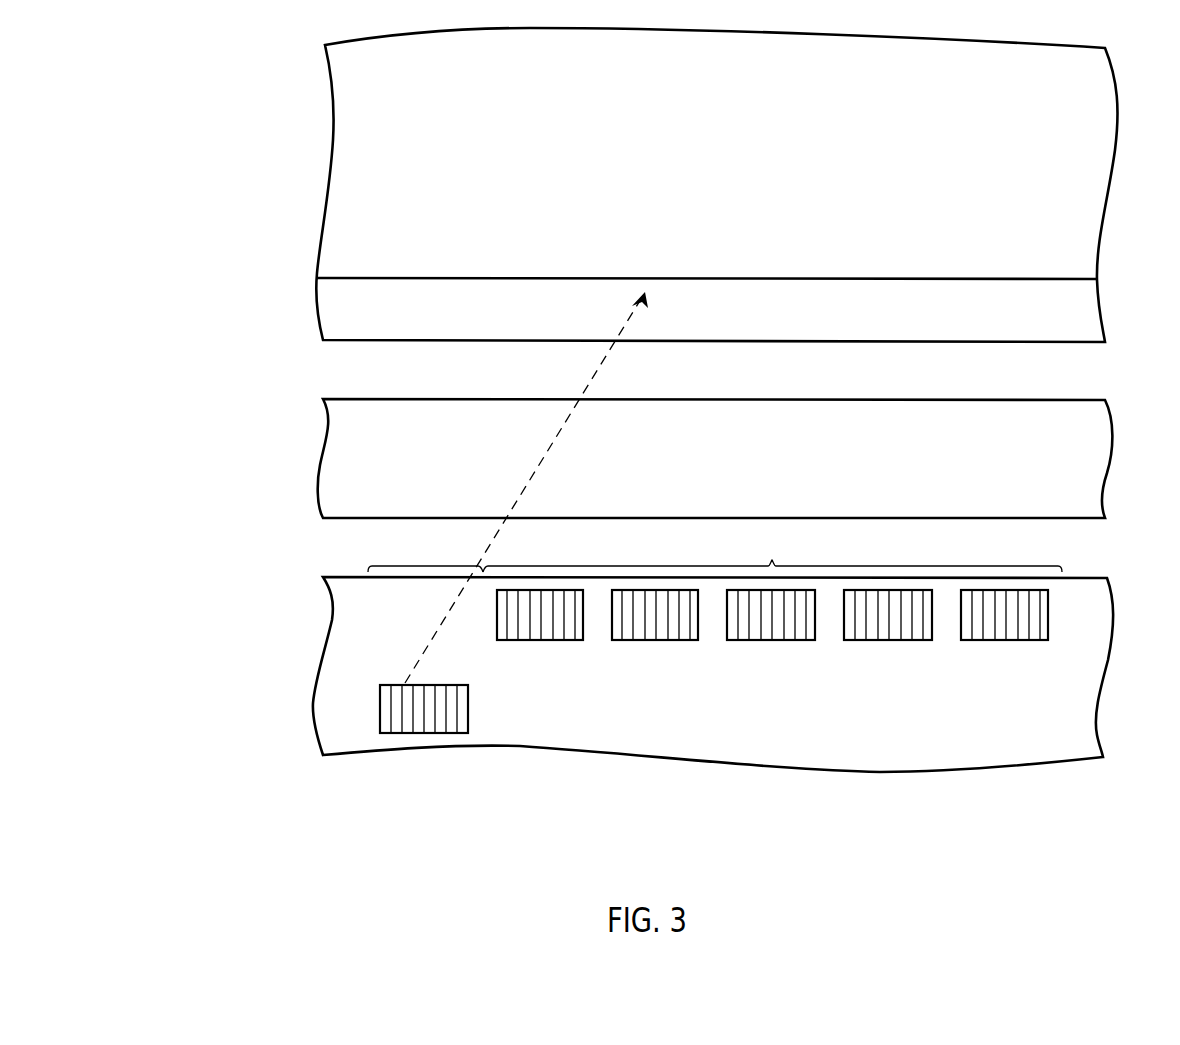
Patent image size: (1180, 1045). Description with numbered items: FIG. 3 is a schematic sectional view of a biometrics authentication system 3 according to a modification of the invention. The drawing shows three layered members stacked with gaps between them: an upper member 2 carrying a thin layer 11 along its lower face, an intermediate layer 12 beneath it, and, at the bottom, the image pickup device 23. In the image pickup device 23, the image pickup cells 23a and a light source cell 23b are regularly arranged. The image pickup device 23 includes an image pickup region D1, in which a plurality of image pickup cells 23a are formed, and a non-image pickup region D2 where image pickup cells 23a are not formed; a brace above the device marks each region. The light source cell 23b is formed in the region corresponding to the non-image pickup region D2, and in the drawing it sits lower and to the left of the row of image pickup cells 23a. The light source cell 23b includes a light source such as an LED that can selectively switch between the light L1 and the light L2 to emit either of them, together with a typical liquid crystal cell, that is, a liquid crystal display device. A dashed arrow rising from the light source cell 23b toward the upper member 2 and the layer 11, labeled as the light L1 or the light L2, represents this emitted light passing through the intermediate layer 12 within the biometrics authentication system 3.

The upper substrate 2 is at (1107, 158).
The optical layer 11 is at (1090, 311).
The intermediate layer 12 is at (1090, 458).
The image pickup device 23 is at (1085, 697).
The image pickup cell 23a is at (542, 628).
The light source cell 23b is at (428, 715).
The biometrics authentication system 3 is at (1070, 800).
The image pickup region D1 is at (772, 560).
The non-image pickup region D2 is at (427, 566).
The light L1 is at (533, 465).
The light L2 is at (356, 468).